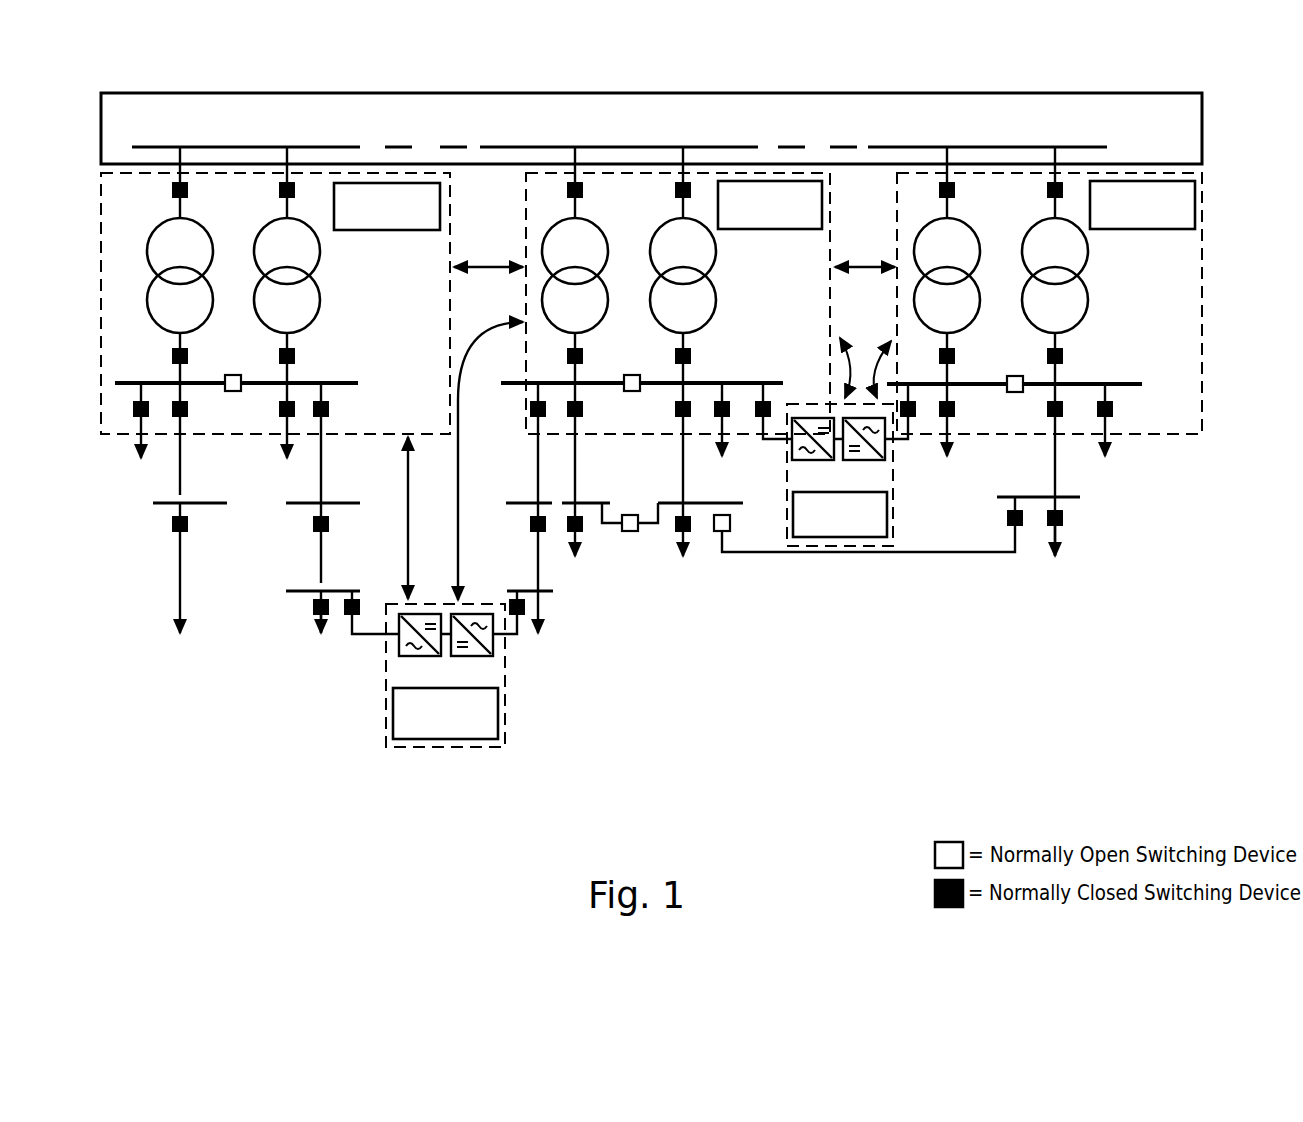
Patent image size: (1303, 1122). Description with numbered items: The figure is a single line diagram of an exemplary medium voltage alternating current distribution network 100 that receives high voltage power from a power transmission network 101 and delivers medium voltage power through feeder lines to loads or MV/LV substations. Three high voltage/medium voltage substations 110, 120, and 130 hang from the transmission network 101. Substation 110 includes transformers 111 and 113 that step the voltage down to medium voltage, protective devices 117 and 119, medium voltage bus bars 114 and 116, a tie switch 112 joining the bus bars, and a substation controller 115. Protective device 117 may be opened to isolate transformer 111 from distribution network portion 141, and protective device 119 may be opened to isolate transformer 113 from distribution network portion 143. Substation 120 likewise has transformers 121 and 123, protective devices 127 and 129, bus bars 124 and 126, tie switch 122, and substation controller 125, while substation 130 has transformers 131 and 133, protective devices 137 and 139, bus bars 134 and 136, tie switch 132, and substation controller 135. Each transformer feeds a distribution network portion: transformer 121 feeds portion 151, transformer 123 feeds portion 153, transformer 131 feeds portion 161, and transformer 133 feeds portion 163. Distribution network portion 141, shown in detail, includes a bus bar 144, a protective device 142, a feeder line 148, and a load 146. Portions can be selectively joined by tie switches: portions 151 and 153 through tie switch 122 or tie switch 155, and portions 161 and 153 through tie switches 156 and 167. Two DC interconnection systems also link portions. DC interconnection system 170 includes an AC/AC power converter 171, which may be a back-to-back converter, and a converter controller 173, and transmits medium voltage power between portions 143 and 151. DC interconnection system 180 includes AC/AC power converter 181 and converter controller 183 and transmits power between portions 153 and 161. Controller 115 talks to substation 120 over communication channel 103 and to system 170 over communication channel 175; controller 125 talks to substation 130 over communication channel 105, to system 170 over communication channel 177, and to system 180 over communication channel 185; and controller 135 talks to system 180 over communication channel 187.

The medium voltage alternating current distribution network 100 is at (1192, 66).
The power transmission network 101 is at (139, 93).
The communication channel 103 is at (487, 265).
The communication channel 105 is at (866, 265).
The substation 110 is at (100, 186).
The transformer 111 is at (148, 296).
The tie switch 112 is at (233, 391).
The transformer 113 is at (312, 325).
The medium voltage bus bar 114 is at (114, 383).
The substation controller 115 is at (387, 232).
The medium voltage bus bar 116 is at (358, 383).
The protective device 117 is at (172, 356).
The protective device 119 is at (278, 356).
The substation 120 is at (525, 185).
The transformer 121 is at (604, 239).
The tie switch 122 is at (632, 391).
The transformer 123 is at (655, 294).
The medium voltage bus bar 124 is at (500, 382).
The substation controller 125 is at (770, 231).
The medium voltage bus bar 126 is at (776, 383).
The protective device 127 is at (583, 357).
The protective device 129 is at (691, 357).
The substation 130 is at (1202, 185).
The transformer 131 is at (977, 239).
The tie switch 132 is at (1015, 392).
The transformer 133 is at (1028, 294).
The medium voltage bus bar 134 is at (932, 384).
The substation controller 135 is at (1142, 231).
The medium voltage bus bar 136 is at (1140, 384).
The protective device 137 is at (955, 357).
The protective device 139 is at (1063, 357).
The distribution network portion 141 is at (172, 578).
The protective device 142 is at (172, 525).
The distribution network portion 143 is at (314, 578).
The bus bar 144 is at (152, 501).
The load 146 is at (134, 475).
The feeder line 148 is at (180, 455).
The distribution network portion 151 is at (584, 548).
The distribution network portion 153 is at (690, 548).
The tie switch 155 is at (630, 515).
The tie switch 156 is at (730, 524).
The distribution network portion 161 is at (959, 440).
The distribution network portion 163 is at (1106, 455).
The tie switch 167 is at (1007, 524).
The DC interconnection system 170 is at (446, 669).
The AC/AC power converter 171 is at (398, 640).
The converter controller 173 is at (393, 712).
The communication channel 175 is at (406, 572).
The communication channel 177 is at (460, 572).
The DC interconnection system 180 is at (835, 459).
The AC/AC power converter 181 is at (792, 442).
The converter controller 183 is at (793, 497).
The communication channel 185 is at (842, 388).
The communication channel 187 is at (870, 362).